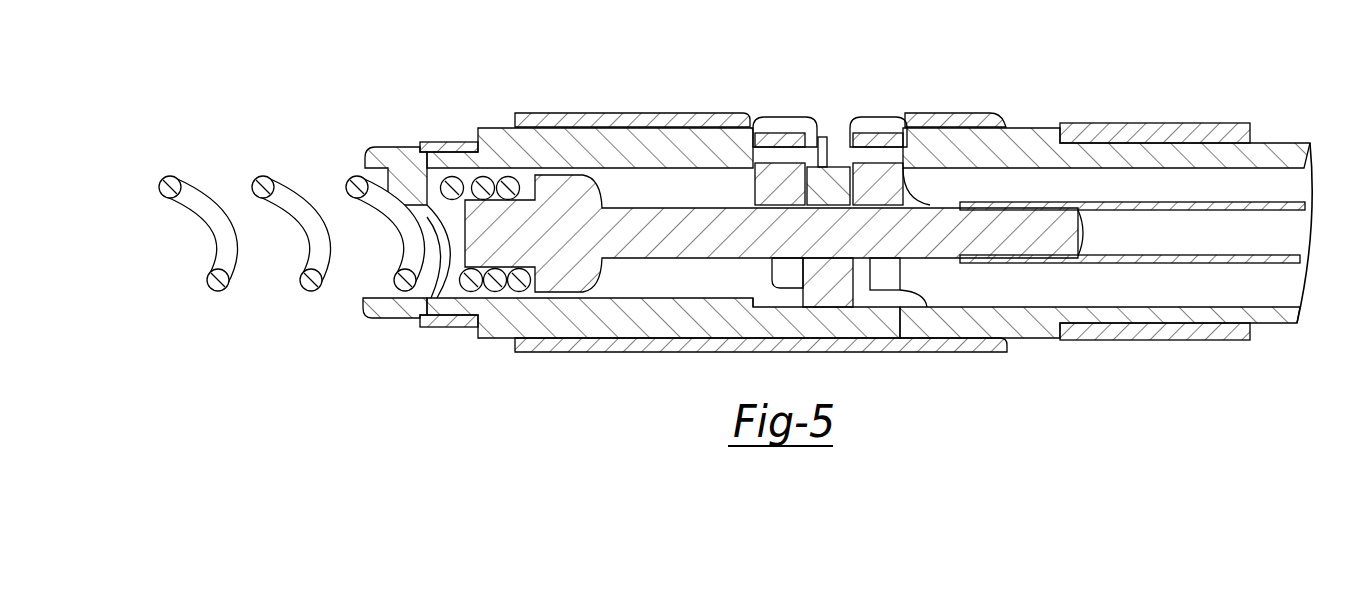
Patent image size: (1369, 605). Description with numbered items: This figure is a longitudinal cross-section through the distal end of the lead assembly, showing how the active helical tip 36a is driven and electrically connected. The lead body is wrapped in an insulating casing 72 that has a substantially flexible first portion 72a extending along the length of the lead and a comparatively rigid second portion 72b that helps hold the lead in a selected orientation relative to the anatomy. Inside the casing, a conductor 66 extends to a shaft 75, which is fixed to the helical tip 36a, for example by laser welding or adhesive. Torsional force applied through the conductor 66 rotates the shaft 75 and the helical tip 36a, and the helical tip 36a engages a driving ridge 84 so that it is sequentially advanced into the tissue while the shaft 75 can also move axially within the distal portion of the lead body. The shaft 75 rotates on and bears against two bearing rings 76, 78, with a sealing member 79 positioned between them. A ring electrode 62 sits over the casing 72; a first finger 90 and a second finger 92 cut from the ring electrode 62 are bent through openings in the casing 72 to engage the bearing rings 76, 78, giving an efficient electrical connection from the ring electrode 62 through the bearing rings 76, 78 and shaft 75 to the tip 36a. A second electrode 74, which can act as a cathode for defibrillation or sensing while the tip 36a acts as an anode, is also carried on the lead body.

The helical tip 36a is at (200, 187).
The driving ridge 84 is at (410, 180).
The ring electrode 62 is at (533, 117).
The second finger 92 is at (788, 127).
The first finger 90 is at (893, 128).
The second portion of casing 72b is at (943, 135).
The casing 72 is at (1042, 135).
The bearing ring 78 is at (760, 167).
The sealing member 79 is at (822, 167).
The bearing ring 76 is at (868, 170).
The first portion of casing 72a is at (1310, 160).
The conductor 66 is at (1293, 258).
The second electrode 74 is at (1140, 333).
The shaft 75 is at (633, 245).